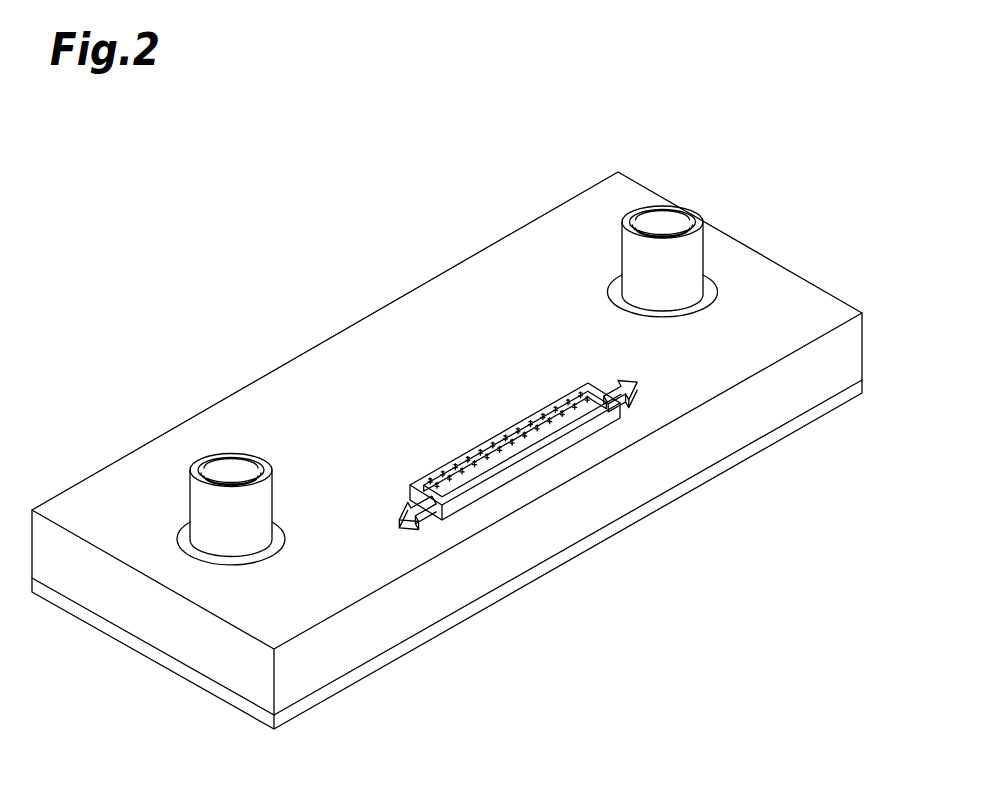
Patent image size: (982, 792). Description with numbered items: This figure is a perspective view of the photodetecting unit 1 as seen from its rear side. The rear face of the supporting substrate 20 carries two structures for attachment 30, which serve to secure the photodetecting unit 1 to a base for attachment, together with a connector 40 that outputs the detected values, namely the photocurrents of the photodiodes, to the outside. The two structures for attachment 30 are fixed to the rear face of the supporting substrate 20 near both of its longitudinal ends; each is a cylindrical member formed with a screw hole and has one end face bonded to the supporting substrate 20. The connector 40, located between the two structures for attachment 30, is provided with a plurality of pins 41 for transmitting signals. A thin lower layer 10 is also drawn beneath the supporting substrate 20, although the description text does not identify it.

The photodetecting unit 1 is at (789, 142).
The base plate (lower layer) 10 is at (827, 407).
The supporting substrate 20 is at (797, 302).
The structure for attachment 30 is at (207, 510).
The connector 40 is at (565, 440).
The pins 41 is at (525, 447).